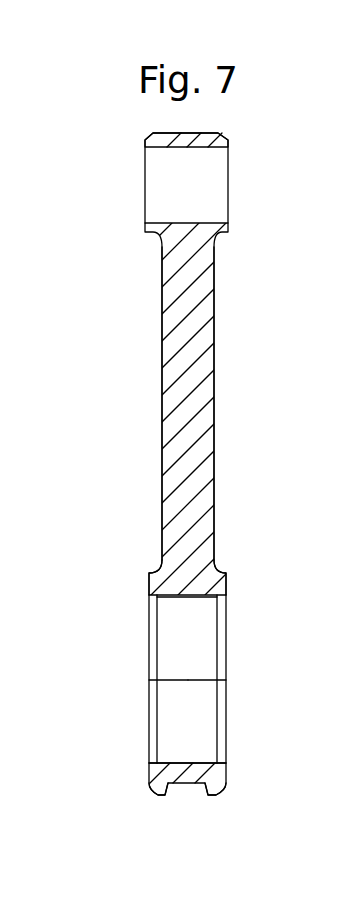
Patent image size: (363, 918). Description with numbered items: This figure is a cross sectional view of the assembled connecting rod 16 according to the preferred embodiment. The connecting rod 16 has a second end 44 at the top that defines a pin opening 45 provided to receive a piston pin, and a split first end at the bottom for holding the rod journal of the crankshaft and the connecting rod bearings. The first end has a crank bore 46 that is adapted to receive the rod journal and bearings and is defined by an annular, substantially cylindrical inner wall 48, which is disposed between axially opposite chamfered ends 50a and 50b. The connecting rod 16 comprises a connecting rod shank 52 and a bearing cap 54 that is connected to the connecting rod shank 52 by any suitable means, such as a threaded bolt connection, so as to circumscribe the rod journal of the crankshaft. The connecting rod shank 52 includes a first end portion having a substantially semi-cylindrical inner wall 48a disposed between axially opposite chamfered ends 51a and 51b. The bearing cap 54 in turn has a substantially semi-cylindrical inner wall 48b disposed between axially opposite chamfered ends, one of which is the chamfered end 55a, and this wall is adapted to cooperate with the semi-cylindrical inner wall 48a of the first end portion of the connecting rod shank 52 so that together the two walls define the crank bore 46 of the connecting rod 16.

The connecting rod 16 is at (214, 442).
The second end 44 is at (148, 229).
The pin opening 45 is at (197, 223).
The crank bore 46 is at (165, 630).
The cylindrical inner wall 48 is at (192, 713).
The semi-cylindrical inner wall 48a is at (185, 597).
The semi-cylindrical inner wall 48b is at (200, 762).
The chamfered end 50a is at (225, 685).
The chamfered end 50b is at (149, 672).
The chamfered end 51a is at (226, 593).
The chamfered end 51b is at (149, 593).
The connecting rod shank 52 is at (214, 315).
The bearing cap 54 is at (192, 790).
The chamfered end 55a is at (149, 763).